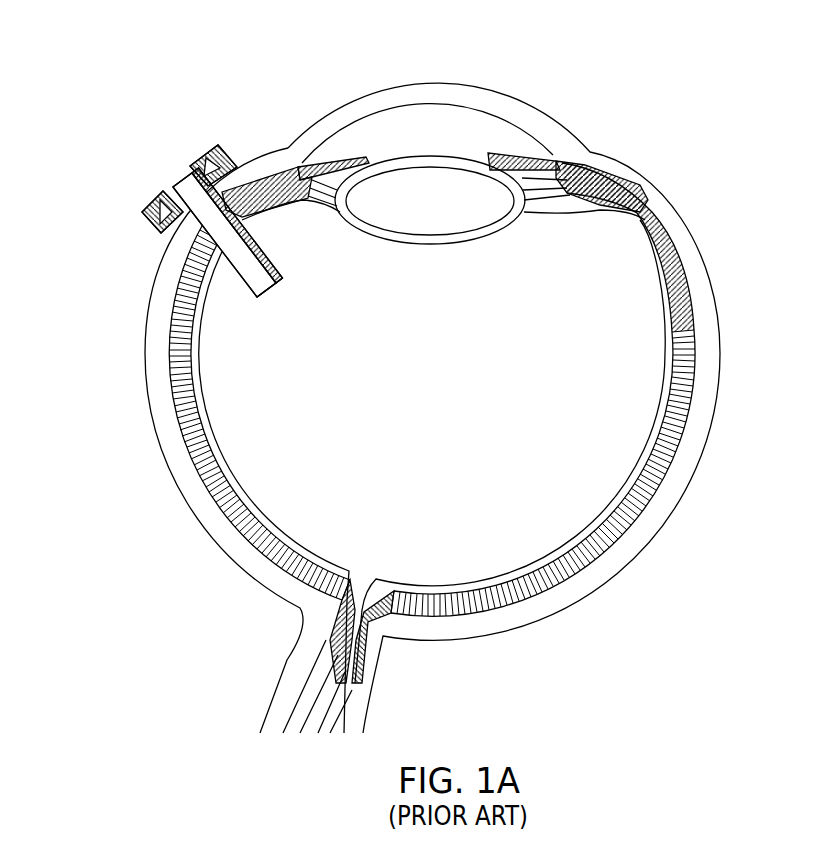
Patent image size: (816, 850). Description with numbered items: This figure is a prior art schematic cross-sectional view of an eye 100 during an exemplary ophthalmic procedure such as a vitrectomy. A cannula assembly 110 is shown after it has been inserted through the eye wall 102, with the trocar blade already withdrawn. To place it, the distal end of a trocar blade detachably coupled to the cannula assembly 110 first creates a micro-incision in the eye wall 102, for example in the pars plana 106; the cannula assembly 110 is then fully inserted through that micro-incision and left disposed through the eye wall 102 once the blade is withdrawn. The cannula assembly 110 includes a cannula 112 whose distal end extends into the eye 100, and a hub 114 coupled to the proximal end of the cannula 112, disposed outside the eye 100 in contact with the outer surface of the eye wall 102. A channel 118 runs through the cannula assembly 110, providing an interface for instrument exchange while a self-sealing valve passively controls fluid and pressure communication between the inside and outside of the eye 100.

The eye 100 is at (210, 171).
The eye wall 102 is at (261, 150).
The pars plana 106 is at (160, 245).
The cannula assembly 110 is at (163, 193).
The cannula 112 is at (273, 247).
The hub 114 is at (203, 157).
The channel 118 is at (275, 283).